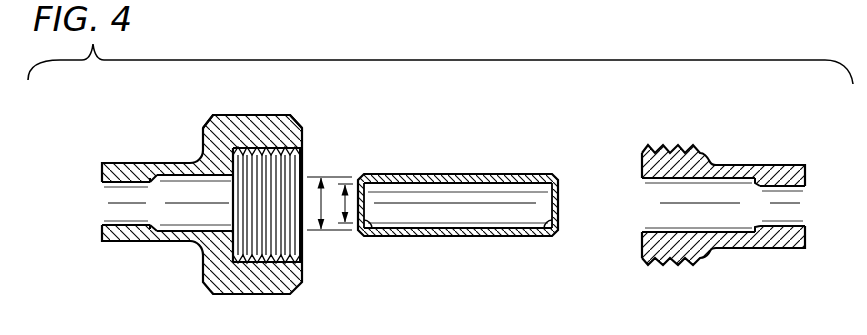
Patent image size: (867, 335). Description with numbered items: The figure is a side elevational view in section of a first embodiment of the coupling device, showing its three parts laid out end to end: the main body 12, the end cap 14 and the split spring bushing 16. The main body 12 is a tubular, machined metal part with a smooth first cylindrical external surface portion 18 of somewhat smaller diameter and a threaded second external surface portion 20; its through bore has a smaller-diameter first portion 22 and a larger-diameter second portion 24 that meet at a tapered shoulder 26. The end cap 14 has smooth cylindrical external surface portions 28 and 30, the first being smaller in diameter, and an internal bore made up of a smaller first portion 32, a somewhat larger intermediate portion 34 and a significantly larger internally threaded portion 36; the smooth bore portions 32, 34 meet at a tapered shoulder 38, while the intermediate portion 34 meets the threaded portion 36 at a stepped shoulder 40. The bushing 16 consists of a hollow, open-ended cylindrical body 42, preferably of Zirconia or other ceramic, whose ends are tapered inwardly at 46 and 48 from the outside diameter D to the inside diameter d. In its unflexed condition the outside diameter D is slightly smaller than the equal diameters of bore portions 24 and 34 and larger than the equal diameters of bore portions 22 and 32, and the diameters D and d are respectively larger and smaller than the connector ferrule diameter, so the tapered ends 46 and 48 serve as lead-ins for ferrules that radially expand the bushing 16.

The main body 12 is at (706, 172).
The end cap 14 is at (198, 183).
The split spring bushing 16 is at (451, 201).
The first cylindrical external surface portion 18 is at (770, 167).
The second cylindrical external surface portion 20 is at (668, 150).
The first bore portion 22 is at (786, 215).
The second bore portion 24 is at (659, 216).
The tapered shoulder 26 is at (753, 211).
The first external surface portion 28 is at (108, 161).
The second external surface portion 30 is at (238, 127).
The first bore portion 32 is at (122, 213).
The intermediate bore portion 34 is at (185, 212).
The internally threaded bore portion 36 is at (301, 174).
The tapered shoulder 38 is at (162, 190).
The stepped shoulder 40 is at (232, 217).
The cylindrical body 42 is at (446, 237).
The tapered end 46 is at (377, 235).
The tapered end 48 is at (548, 232).
The outside diameter D is at (329, 203).
The inside diameter d is at (345, 203).